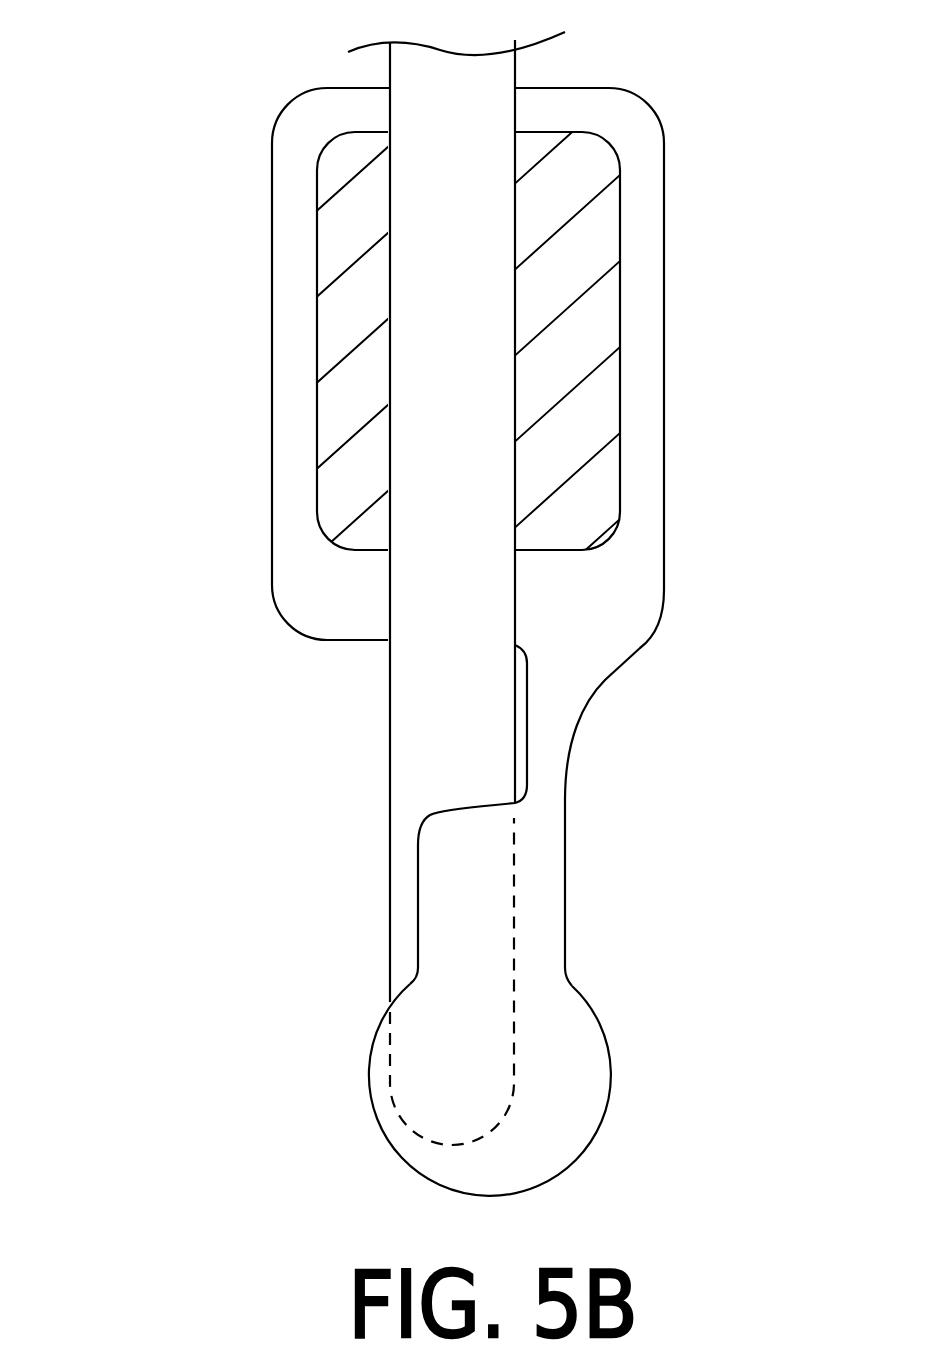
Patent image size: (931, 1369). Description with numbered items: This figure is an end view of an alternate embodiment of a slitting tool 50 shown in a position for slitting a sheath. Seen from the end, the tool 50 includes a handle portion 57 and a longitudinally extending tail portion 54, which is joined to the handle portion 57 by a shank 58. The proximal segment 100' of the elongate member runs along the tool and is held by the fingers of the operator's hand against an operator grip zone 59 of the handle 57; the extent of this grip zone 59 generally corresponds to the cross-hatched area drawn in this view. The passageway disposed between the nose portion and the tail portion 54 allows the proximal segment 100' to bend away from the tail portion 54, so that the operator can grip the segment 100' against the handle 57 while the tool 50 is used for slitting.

The slitting tool 50 is at (178, 219).
The handle portion 57 is at (626, 135).
The operator grip zone 59 is at (577, 417).
The proximal segment of elongate member 100' is at (425, 588).
The shank 58 is at (537, 882).
The tail portion 54 is at (567, 1062).